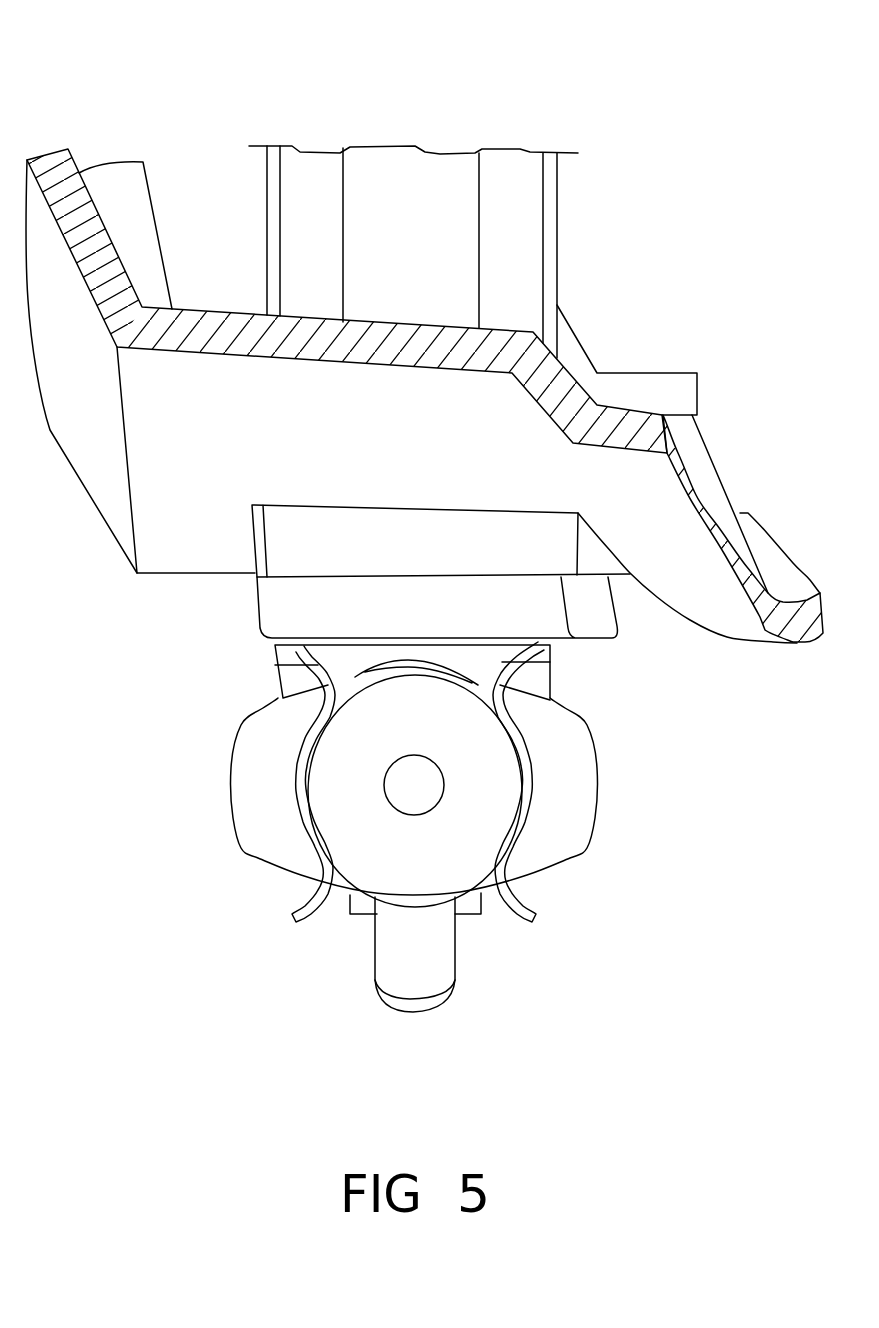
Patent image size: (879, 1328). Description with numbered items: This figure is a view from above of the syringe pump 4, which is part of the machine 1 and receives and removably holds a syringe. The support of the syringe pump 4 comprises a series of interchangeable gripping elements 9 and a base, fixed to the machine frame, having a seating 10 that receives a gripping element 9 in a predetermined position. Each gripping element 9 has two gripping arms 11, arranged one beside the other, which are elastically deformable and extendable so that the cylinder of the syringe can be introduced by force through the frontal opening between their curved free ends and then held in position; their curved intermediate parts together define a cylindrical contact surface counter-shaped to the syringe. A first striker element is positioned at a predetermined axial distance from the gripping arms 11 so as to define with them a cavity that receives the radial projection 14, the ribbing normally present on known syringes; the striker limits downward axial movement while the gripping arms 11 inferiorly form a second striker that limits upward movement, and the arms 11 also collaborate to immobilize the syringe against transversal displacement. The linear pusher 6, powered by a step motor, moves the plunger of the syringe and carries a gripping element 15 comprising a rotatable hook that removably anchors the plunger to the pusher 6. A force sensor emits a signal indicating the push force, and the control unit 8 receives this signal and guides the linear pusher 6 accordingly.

The seat shell assembly 1 is at (661, 163).
The control unit 8 is at (322, 114).
The seating 10 is at (250, 617).
The syringe pump 4 is at (170, 692).
The gripping element 9 is at (505, 679).
The radial projection 14 is at (232, 800).
The gripping arms 11 is at (302, 828).
The linear pusher 6 is at (472, 905).
The gripping element 15 is at (388, 1011).